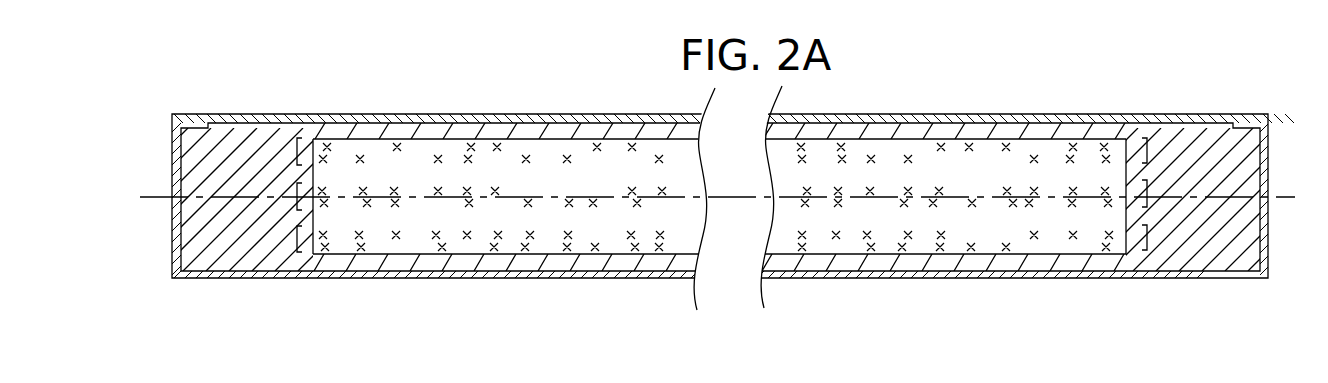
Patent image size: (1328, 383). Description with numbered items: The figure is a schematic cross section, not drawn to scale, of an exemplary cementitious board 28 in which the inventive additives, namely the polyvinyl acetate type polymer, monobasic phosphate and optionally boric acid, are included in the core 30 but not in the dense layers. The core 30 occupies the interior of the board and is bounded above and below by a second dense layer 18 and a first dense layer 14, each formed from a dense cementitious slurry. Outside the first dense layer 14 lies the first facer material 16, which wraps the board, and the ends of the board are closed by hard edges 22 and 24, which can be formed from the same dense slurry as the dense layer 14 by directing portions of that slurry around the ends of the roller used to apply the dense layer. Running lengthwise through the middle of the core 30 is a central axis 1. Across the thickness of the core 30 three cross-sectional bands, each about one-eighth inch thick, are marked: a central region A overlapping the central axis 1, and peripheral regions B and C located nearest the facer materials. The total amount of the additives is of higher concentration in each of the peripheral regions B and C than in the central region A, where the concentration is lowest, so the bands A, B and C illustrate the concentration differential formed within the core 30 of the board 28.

The central axis 1 is at (715, 197).
The first dense layer 14 is at (917, 257).
The first facer material 16 is at (1040, 273).
The second dense layer 18 is at (903, 132).
The hard edge 22 is at (207, 165).
The hard edge 24 is at (1233, 137).
The board 28 is at (520, 290).
The core 30 is at (457, 175).
The central region A is at (297, 197).
The peripheral region B is at (297, 150).
The peripheral region C is at (297, 240).